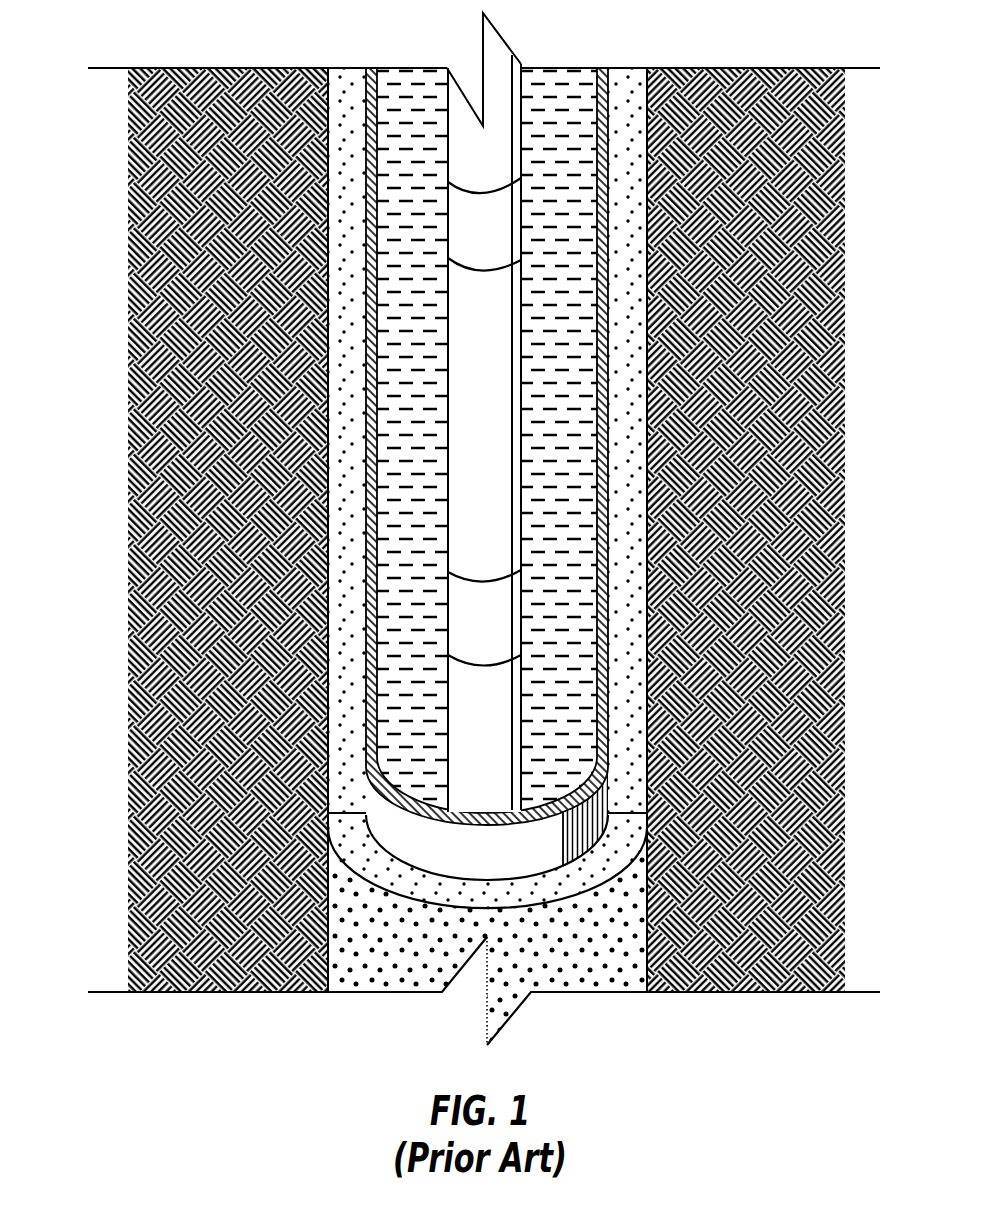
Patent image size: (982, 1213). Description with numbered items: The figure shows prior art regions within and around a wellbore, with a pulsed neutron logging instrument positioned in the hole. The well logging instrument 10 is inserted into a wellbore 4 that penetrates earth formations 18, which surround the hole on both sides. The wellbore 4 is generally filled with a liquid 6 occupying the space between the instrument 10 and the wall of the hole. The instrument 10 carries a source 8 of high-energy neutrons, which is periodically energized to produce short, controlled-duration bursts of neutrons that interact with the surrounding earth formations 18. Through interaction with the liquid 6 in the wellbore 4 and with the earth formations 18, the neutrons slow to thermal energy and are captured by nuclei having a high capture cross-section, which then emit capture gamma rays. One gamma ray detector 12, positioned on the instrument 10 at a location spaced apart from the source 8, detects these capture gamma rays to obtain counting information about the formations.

The wellbore 4 is at (408, 84).
The liquid 6 is at (597, 408).
The source 8 is at (476, 602).
The well logging instrument 10 is at (576, 60).
The detector 12 is at (458, 200).
The earth formations 18 is at (158, 285).